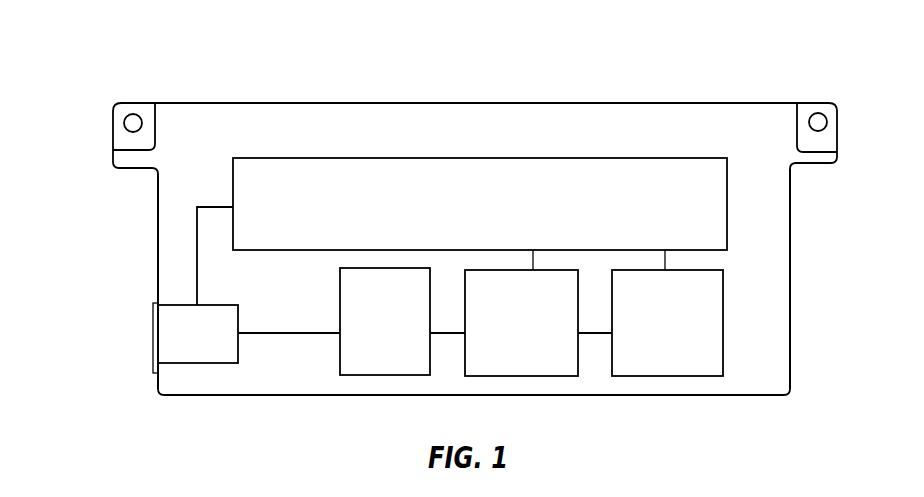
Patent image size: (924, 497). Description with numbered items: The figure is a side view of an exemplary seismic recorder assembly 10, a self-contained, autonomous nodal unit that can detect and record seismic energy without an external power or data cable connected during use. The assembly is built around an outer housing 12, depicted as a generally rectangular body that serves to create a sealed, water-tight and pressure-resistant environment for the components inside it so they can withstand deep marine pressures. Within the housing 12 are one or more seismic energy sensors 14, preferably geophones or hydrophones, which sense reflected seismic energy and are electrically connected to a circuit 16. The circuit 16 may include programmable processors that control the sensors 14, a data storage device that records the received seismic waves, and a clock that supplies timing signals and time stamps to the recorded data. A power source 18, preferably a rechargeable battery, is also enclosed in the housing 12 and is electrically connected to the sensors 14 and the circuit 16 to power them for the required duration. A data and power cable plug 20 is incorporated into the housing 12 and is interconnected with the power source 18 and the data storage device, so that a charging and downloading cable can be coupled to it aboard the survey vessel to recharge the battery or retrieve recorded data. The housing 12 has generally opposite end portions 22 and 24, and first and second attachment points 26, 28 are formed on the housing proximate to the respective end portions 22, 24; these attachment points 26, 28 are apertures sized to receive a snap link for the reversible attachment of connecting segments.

The seismic recorder assembly 10 is at (488, 218).
The outer housing 12 is at (422, 125).
The seismic energy sensors 14 is at (545, 337).
The circuit 16 is at (405, 334).
The power source 18 is at (470, 220).
The data and power cable plug 20 is at (153, 332).
The end portion 22 is at (157, 217).
The end portion 24 is at (790, 208).
The first attachment point 26 is at (132, 118).
The second attachment point 28 is at (818, 118).